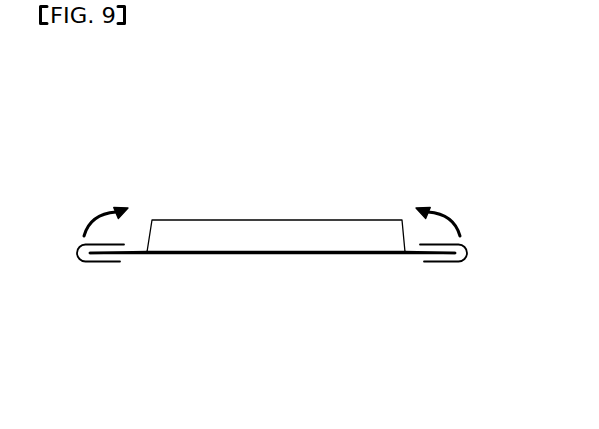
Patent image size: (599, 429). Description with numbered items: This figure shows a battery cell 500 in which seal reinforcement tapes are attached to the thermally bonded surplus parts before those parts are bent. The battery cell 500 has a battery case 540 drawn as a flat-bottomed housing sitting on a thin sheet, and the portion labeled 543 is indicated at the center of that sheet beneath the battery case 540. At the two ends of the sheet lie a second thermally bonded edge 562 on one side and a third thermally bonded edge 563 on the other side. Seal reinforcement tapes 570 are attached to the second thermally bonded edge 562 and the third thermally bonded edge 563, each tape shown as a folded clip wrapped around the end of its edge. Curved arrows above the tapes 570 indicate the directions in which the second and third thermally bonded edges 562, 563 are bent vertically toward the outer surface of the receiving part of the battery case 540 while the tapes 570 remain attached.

The battery cell 500 is at (98, 128).
The battery case 540 is at (341, 209).
The central portion of sheet 543 is at (275, 247).
The second thermally bonded edge 562 is at (133, 253).
The third thermally bonded edge 563 is at (415, 252).
The seal reinforcement tape 570 is at (92, 262).